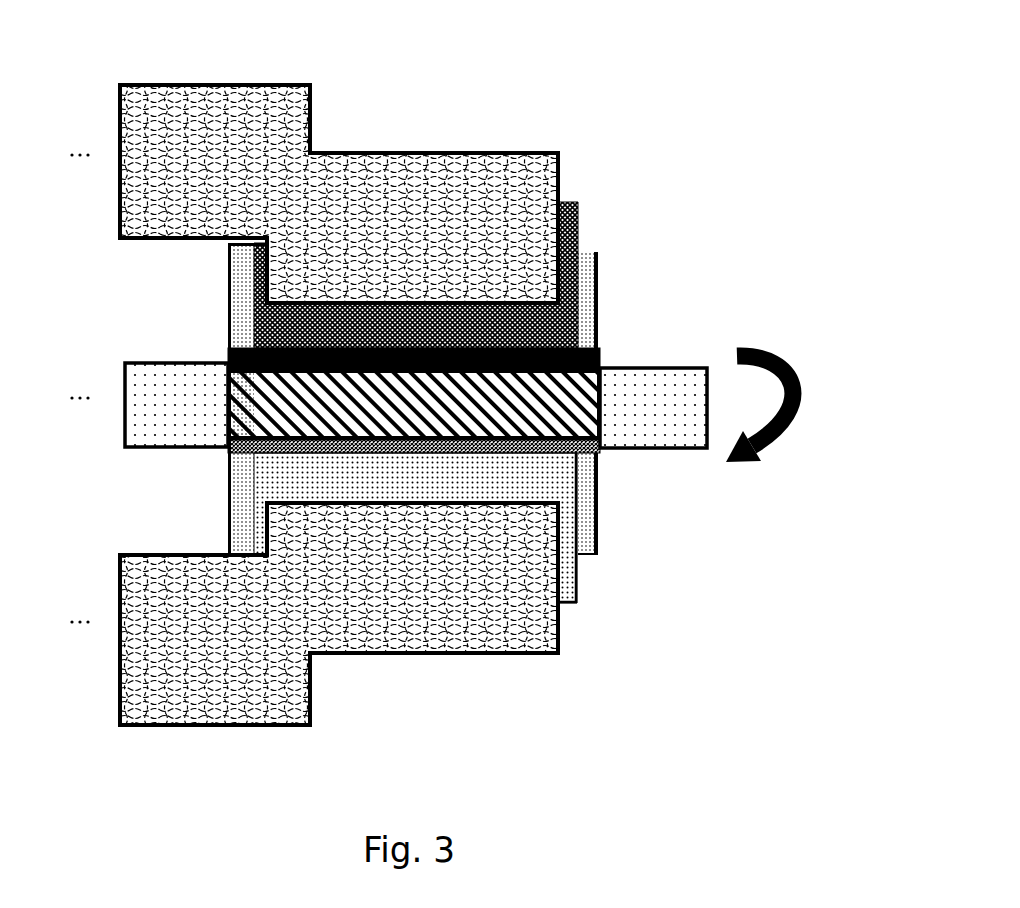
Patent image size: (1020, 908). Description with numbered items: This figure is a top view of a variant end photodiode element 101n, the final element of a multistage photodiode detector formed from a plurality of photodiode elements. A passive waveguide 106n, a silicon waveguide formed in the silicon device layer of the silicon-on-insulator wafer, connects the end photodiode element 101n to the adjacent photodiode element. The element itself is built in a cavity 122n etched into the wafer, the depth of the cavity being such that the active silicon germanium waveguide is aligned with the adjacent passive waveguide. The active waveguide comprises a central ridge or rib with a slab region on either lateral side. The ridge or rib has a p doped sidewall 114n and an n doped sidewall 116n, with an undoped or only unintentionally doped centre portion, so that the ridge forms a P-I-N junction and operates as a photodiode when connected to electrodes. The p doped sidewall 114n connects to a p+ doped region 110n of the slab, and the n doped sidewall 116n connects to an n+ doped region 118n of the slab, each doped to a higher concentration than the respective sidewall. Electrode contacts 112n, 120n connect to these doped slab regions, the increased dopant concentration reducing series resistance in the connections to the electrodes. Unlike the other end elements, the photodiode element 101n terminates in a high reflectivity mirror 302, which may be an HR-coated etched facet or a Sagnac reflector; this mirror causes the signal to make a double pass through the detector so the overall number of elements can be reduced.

The end photodiode element 101n is at (607, 84).
The passive waveguide 106n is at (165, 388).
The p+ doped region 110n is at (568, 257).
The electrode contact 112n is at (382, 177).
The p doped sidewall 114n is at (590, 357).
The n doped sidewall 116n is at (593, 447).
The n+ doped region 118n is at (565, 520).
The electrode contact 120n is at (283, 668).
The cavity 122n is at (597, 300).
The high reflectivity mirror 302 is at (700, 448).